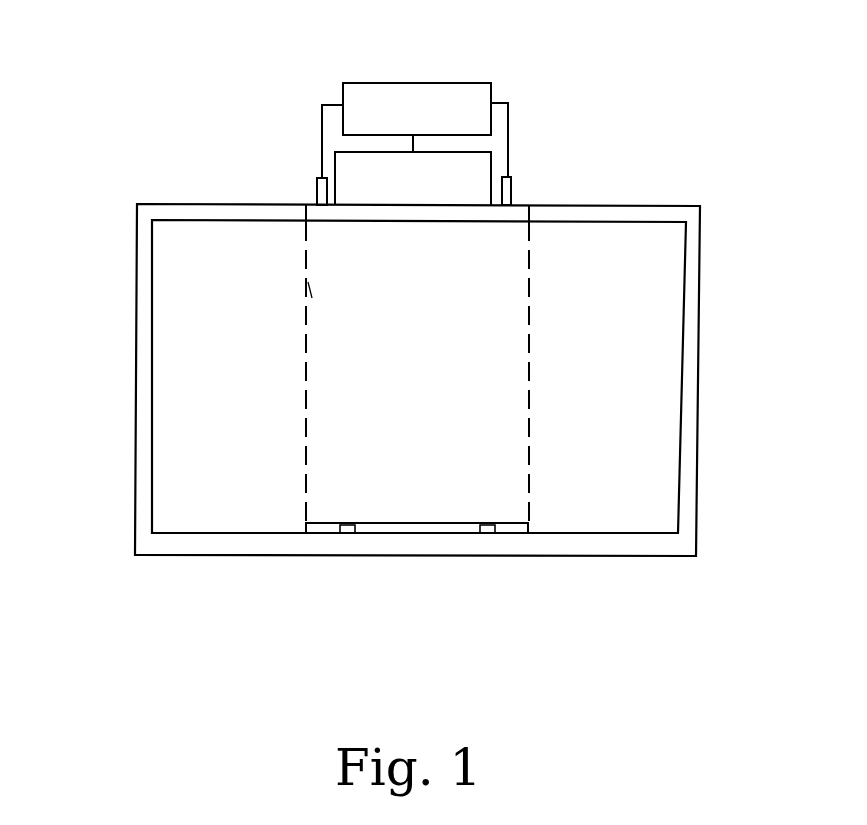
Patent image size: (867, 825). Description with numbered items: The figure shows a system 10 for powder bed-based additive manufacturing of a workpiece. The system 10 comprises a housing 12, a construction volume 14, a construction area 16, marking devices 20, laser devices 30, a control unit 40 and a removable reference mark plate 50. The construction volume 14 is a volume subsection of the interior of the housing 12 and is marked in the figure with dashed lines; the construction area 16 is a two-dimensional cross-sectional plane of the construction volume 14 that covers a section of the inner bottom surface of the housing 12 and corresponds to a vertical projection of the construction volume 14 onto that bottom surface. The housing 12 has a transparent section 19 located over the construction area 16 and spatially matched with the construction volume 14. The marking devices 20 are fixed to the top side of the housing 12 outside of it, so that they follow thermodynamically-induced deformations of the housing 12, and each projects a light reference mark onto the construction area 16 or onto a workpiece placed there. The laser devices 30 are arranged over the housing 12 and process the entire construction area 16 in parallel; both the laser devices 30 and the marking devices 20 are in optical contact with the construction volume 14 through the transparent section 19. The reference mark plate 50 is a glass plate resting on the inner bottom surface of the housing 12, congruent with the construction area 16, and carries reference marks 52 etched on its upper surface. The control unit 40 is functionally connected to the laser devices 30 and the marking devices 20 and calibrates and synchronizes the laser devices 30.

The system 10 is at (203, 118).
The housing 12 is at (143, 313).
The construction volume 14 is at (511, 485).
The construction area 16 is at (443, 533).
The transparent section 19 is at (313, 217).
The marking devices 20 is at (317, 193).
The laser devices 30 is at (472, 180).
The control unit 40 is at (463, 98).
The reference mark plate 50 is at (513, 529).
The reference marks 52 is at (333, 530).